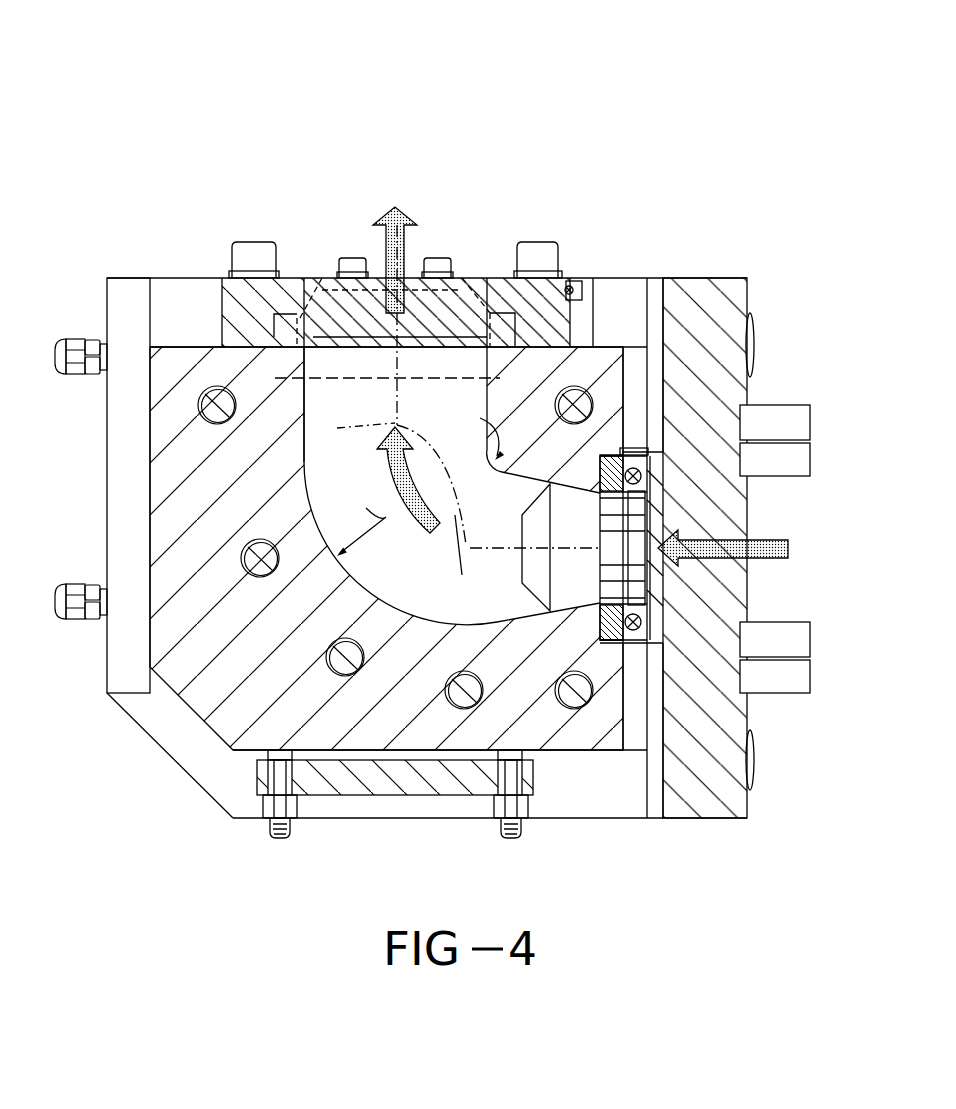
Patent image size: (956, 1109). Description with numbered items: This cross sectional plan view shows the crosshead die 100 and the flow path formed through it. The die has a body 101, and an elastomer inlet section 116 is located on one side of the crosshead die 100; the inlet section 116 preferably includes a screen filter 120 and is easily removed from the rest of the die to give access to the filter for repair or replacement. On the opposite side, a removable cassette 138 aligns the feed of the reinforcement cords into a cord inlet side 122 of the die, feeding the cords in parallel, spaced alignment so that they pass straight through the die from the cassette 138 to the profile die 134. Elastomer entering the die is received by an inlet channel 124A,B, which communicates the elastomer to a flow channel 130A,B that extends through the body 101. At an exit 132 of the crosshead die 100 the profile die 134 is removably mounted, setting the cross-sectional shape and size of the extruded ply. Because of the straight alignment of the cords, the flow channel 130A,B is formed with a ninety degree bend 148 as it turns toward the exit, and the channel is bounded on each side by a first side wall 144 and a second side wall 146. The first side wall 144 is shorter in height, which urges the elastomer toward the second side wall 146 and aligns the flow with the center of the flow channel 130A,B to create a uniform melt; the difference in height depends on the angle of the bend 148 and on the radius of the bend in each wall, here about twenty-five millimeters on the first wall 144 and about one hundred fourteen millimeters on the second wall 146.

The crosshead die 100 is at (147, 114).
The body 101 is at (102, 501).
The elastomer inlet section 116 is at (710, 303).
The screen filter 120 is at (608, 530).
The cord inlet side 122 is at (585, 821).
The inlet channel 124A,B is at (573, 570).
The flow channel 130A,B is at (522, 608).
The exit 132 is at (180, 278).
The profile die 134 is at (568, 287).
The removable cassette 138 is at (341, 800).
The first side wall 144 is at (600, 380).
The second side wall 146 is at (307, 495).
The 90 degree bend 148 is at (463, 557).